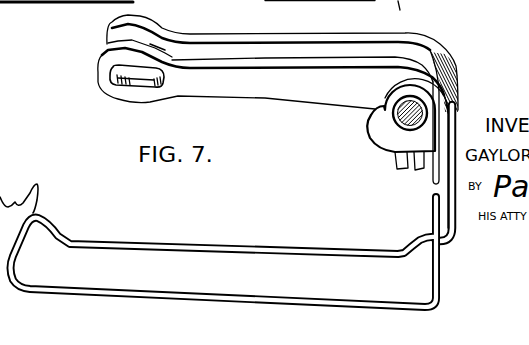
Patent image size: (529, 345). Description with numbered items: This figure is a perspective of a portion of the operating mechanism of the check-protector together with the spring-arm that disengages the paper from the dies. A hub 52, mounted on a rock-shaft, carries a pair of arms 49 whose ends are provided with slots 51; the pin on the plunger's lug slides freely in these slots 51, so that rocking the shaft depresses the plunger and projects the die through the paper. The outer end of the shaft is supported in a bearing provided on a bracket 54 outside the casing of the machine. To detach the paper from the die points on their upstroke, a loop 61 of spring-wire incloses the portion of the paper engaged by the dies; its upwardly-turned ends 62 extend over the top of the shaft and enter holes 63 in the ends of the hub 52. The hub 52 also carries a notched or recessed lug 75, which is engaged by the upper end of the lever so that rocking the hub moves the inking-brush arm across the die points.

The arms 49 is at (277, 43).
The slots 51 is at (154, 44).
The hub 52 is at (438, 60).
The bracket 54 is at (412, 8).
The loop 61 is at (227, 243).
The upwardly-turned ends 62 is at (425, 184).
The holes 63 is at (375, 120).
The notched or recessed lug 75 is at (401, 159).